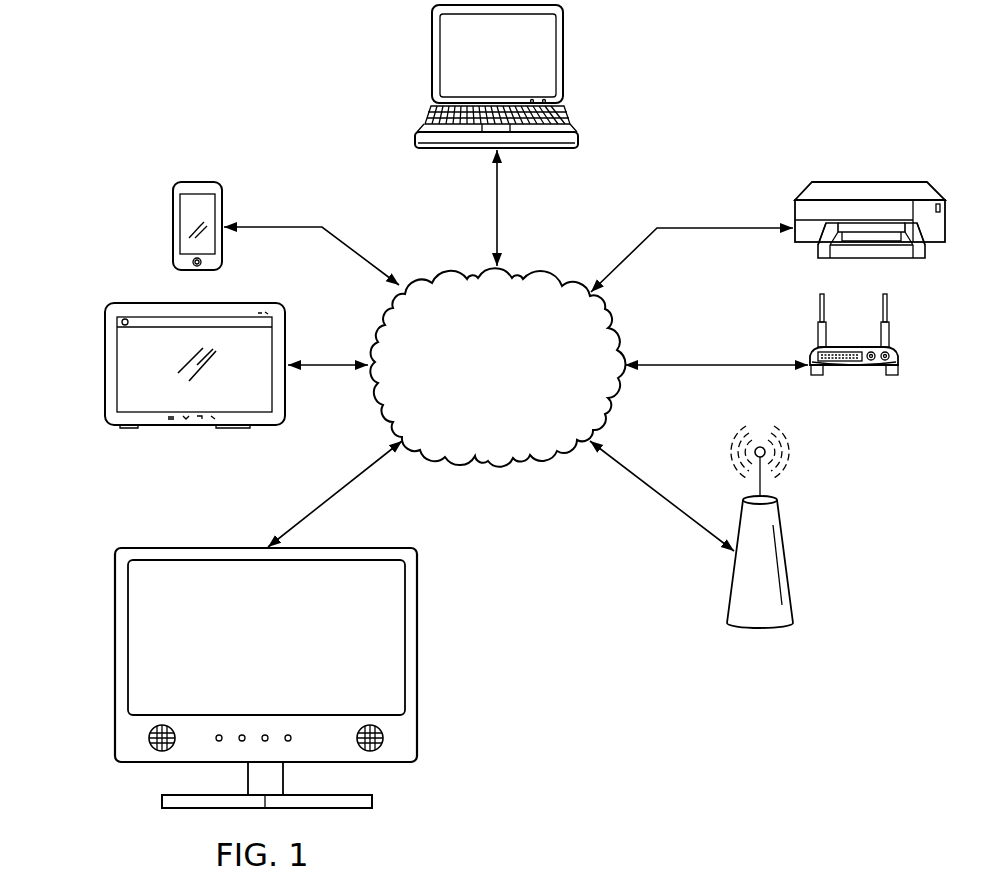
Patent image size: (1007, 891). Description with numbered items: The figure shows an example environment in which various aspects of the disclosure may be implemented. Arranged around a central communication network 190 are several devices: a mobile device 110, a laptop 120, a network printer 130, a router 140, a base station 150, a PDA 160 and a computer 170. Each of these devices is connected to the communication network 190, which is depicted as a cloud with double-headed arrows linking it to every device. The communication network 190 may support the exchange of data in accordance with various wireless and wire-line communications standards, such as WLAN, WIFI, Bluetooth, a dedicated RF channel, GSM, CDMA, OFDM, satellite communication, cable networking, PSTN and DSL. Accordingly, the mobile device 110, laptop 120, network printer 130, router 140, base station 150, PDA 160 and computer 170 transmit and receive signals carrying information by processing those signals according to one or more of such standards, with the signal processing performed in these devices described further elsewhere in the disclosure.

The mobile device 110 is at (196, 181).
The laptop 120 is at (474, 71).
The network printer 130 is at (870, 182).
The router 140 is at (850, 366).
The base station 150 is at (760, 627).
The PDA 160 is at (105, 354).
The computer 170 is at (242, 654).
The communication network 190 is at (548, 461).